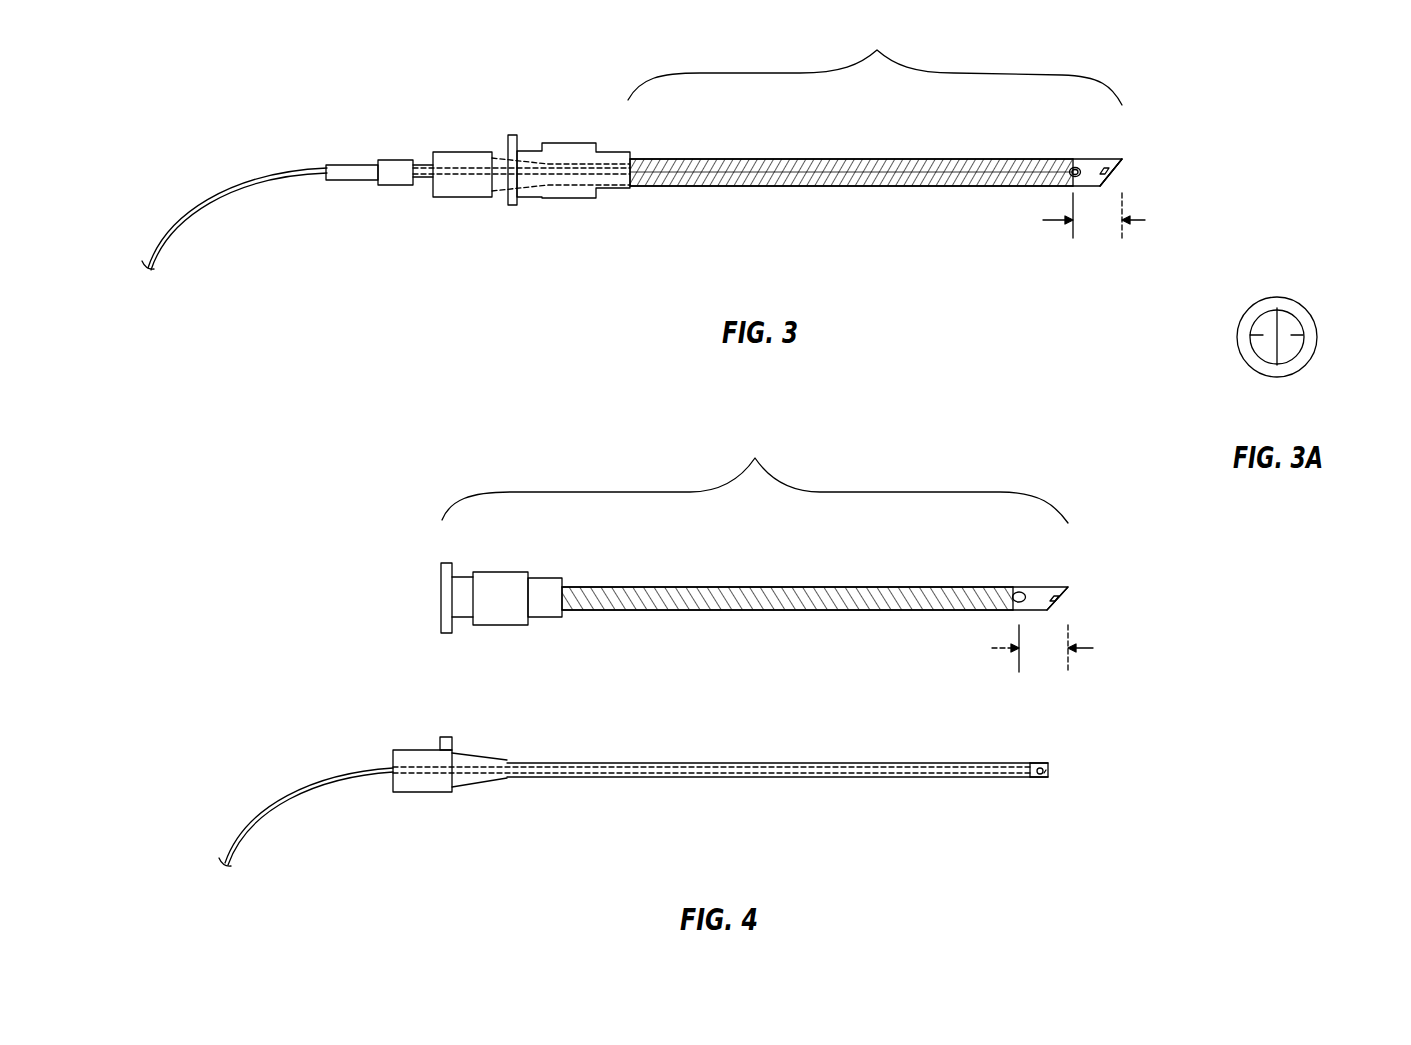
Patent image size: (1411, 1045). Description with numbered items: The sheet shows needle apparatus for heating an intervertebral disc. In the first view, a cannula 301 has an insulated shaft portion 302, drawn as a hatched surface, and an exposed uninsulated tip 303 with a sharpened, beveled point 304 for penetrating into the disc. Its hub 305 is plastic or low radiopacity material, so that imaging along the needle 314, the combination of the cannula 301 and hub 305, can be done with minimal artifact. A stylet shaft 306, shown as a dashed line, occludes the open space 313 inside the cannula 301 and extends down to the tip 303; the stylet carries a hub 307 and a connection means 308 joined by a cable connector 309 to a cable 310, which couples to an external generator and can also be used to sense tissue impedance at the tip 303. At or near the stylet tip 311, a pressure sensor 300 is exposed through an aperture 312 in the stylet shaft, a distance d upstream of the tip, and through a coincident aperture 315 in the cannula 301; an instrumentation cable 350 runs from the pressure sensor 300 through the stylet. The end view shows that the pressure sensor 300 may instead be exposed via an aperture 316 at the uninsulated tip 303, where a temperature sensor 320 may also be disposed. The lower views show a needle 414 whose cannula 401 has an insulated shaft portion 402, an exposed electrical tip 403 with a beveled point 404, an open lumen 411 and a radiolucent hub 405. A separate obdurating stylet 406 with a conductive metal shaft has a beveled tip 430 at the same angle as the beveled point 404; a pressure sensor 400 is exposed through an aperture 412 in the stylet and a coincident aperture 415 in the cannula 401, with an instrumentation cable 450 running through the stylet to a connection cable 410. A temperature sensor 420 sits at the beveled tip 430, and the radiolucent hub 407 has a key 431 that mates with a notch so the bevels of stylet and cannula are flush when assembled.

In FIG. 3, the pressure sensor 300 is at (1072, 188).
In FIG. 3A, the pressure sensor 300 is at (1302, 335).
In FIG. 3, the cannula 301 is at (705, 158).
In FIG. 3, the insulated shaft portion 302 is at (847, 160).
In FIG. 3, the exposed uninsulated tip 303 is at (1085, 160).
In FIG. 3A, the exposed uninsulated tip 303 is at (1238, 332).
In FIG. 3, the beveled point 304 is at (1110, 165).
In FIG. 3A, the beveled point 304 is at (1297, 300).
In FIG. 3, the hub 305 is at (565, 143).
In FIG. 3, the stylet shaft 306 is at (425, 175).
In FIG. 3, the hub 307 is at (468, 197).
In FIG. 3, the connection means 308 is at (398, 160).
In FIG. 3, the cable connector 309 is at (349, 163).
In FIG. 3, the cable 310 is at (208, 198).
In FIG. 3, the tip 311 is at (1100, 183).
In FIG. 3, the aperture 312 is at (1068, 172).
In FIG. 3, the open space 313 is at (793, 162).
In FIG. 3, the needle 314 is at (875, 63).
In FIG. 3, the coincident aperture 315 is at (1072, 168).
In FIG. 3A, the aperture 316 is at (1287, 355).
In FIG. 3, the temperature sensor 320 is at (1108, 170).
In FIG. 3A, the temperature sensor 320 is at (1252, 335).
In FIG. 3, the instrumentation cable 350 is at (742, 184).
In FIG. 4, the pressure sensor 400 is at (1037, 777).
In FIG. 4, the cannula 401 is at (650, 585).
In FIG. 4, the insulated shaft portion 402 is at (795, 587).
In FIG. 4, the exposed electrical tip 403 is at (1032, 587).
In FIG. 4, the beveled point 404 is at (1065, 590).
In FIG. 4, the hub 405 is at (502, 572).
In FIG. 4, the obdurating stylet 406 is at (670, 763).
In FIG. 4, the radiolucent hub 407 is at (427, 793).
In FIG. 4, the connection cable 410 is at (295, 782).
In FIG. 4, the open lumen 411 is at (905, 587).
In FIG. 4, the aperture 412 is at (1042, 767).
In FIG. 4, the needle 414 is at (755, 473).
In FIG. 4, the coincident aperture 415 is at (1020, 605).
In FIG. 4, the temperature sensor 420 is at (1050, 772).
In FIG. 4, the beveled tip 430 is at (1048, 767).
In FIG. 4, the key 431 is at (448, 737).
In FIG. 4, the instrumentation cable 450 is at (763, 777).